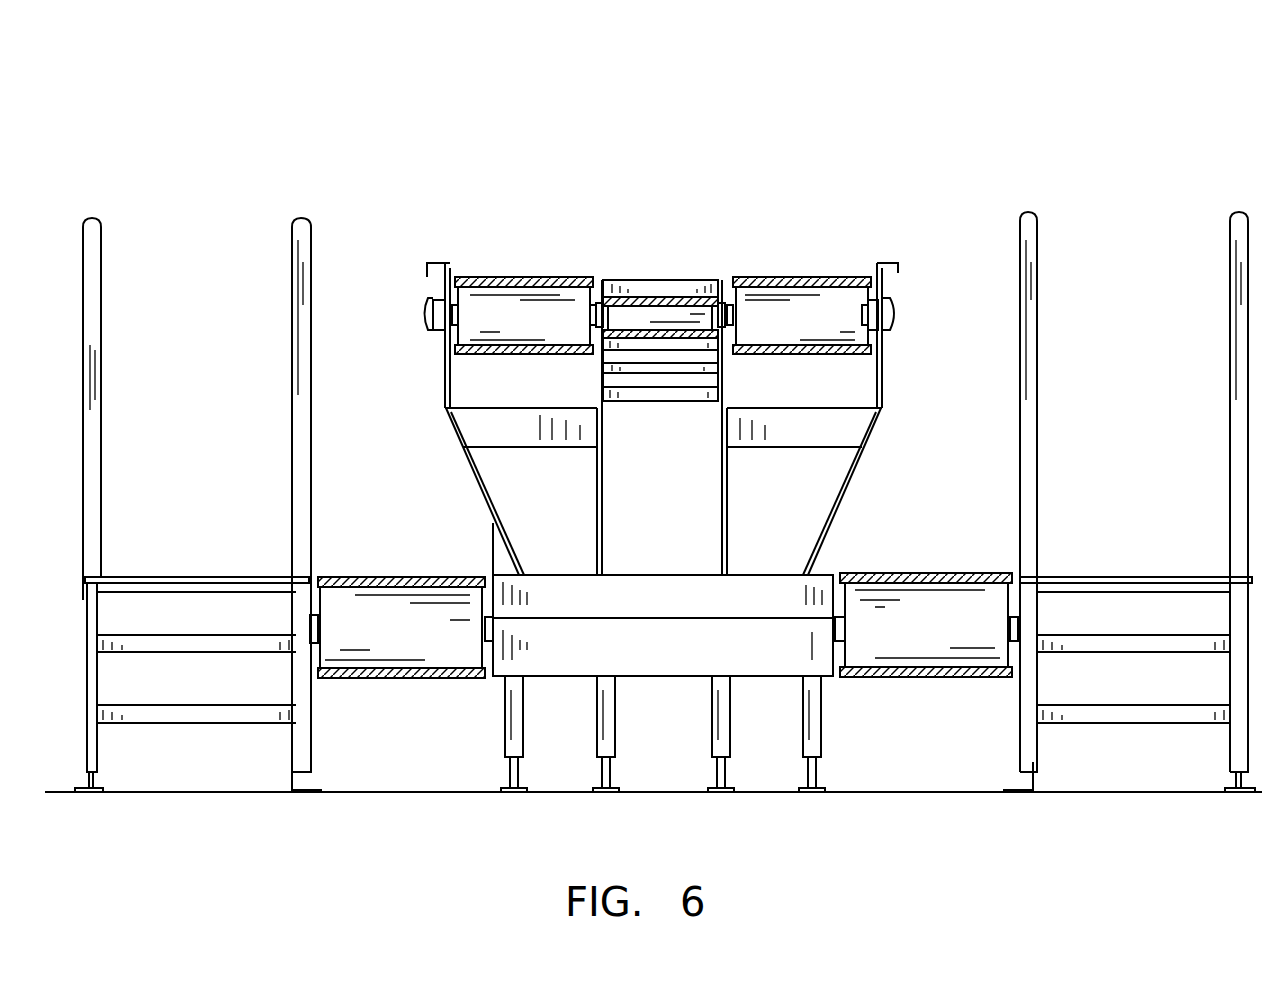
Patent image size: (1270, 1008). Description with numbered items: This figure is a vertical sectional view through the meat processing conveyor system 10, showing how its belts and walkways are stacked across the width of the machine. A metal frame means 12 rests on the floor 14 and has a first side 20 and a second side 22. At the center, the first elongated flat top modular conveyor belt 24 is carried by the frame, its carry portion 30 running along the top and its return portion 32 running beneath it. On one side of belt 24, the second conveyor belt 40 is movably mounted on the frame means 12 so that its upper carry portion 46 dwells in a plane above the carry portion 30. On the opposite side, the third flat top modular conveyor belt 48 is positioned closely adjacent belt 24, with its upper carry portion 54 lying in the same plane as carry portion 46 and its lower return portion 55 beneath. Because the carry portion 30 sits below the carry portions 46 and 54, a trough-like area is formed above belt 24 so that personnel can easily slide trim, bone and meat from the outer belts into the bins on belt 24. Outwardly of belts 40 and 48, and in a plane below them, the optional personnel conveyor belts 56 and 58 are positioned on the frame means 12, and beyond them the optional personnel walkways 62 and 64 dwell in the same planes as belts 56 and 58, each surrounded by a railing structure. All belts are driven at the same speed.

The meat processing conveyor system 10 is at (890, 207).
The frame means 12 is at (482, 712).
The floor 14 is at (393, 792).
The first side 20 is at (927, 267).
The second side 22 is at (418, 312).
The first elongated flat top modular conveyor belt 24 is at (669, 303).
The carry portion 30 is at (683, 297).
The return portion 32 is at (667, 338).
The second elongated conveyor belt 40 is at (833, 262).
The upper carry portion 46 is at (875, 290).
The third elongated flat top modular conveyor belt 48 is at (515, 253).
The upper carry portion 54 is at (552, 277).
The lower return portion 55 is at (535, 355).
The personnel conveyor belt 56 is at (935, 575).
The personnel conveyor belt 58 is at (400, 568).
The personnel walkway 62 is at (1100, 562).
The personnel walkway 64 is at (205, 565).